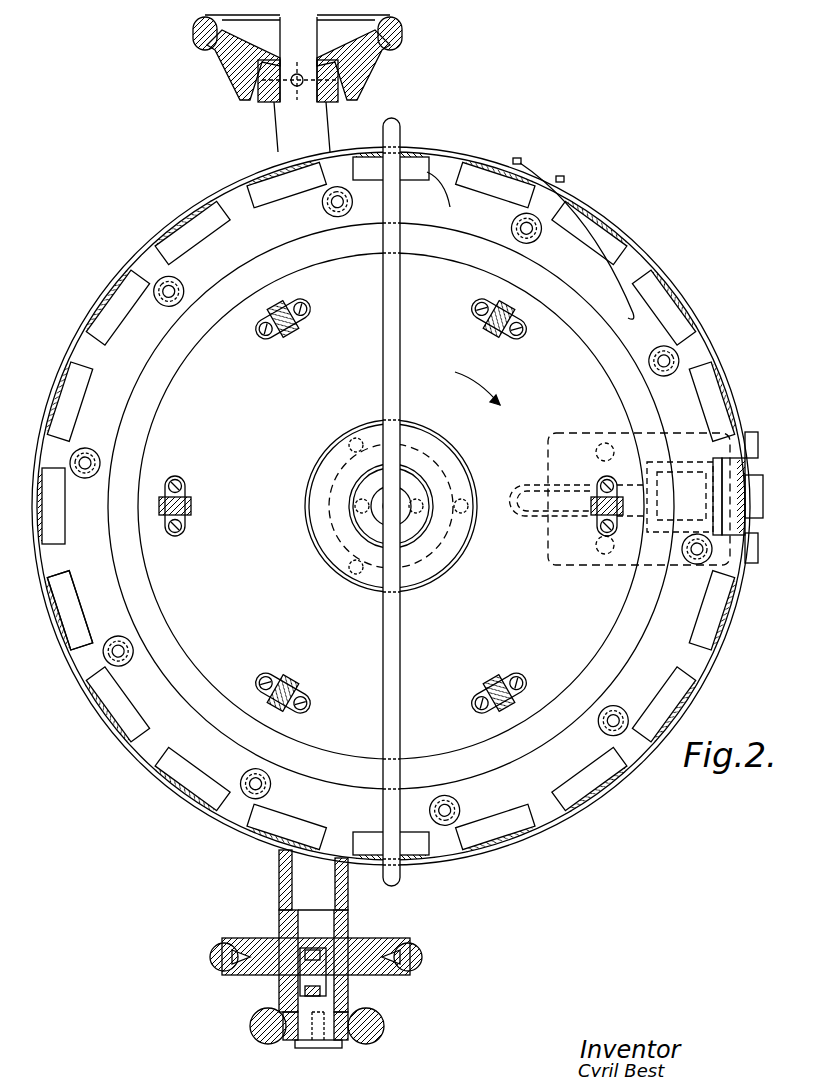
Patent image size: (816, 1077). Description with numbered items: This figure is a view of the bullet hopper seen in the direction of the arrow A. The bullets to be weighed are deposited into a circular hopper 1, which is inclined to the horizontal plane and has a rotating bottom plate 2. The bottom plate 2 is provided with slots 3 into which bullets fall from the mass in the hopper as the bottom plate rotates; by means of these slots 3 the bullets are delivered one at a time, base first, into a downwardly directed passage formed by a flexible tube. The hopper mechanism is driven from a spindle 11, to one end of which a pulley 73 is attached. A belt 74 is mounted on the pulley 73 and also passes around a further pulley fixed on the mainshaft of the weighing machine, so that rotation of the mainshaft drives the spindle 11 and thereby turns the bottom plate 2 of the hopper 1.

The circular hopper 1 is at (135, 352).
The rotating bottom plate 2 is at (55, 562).
The slots 3 is at (500, 182).
The spindle 11 is at (308, 873).
The pulley 73 is at (378, 938).
The belt 74 is at (422, 957).